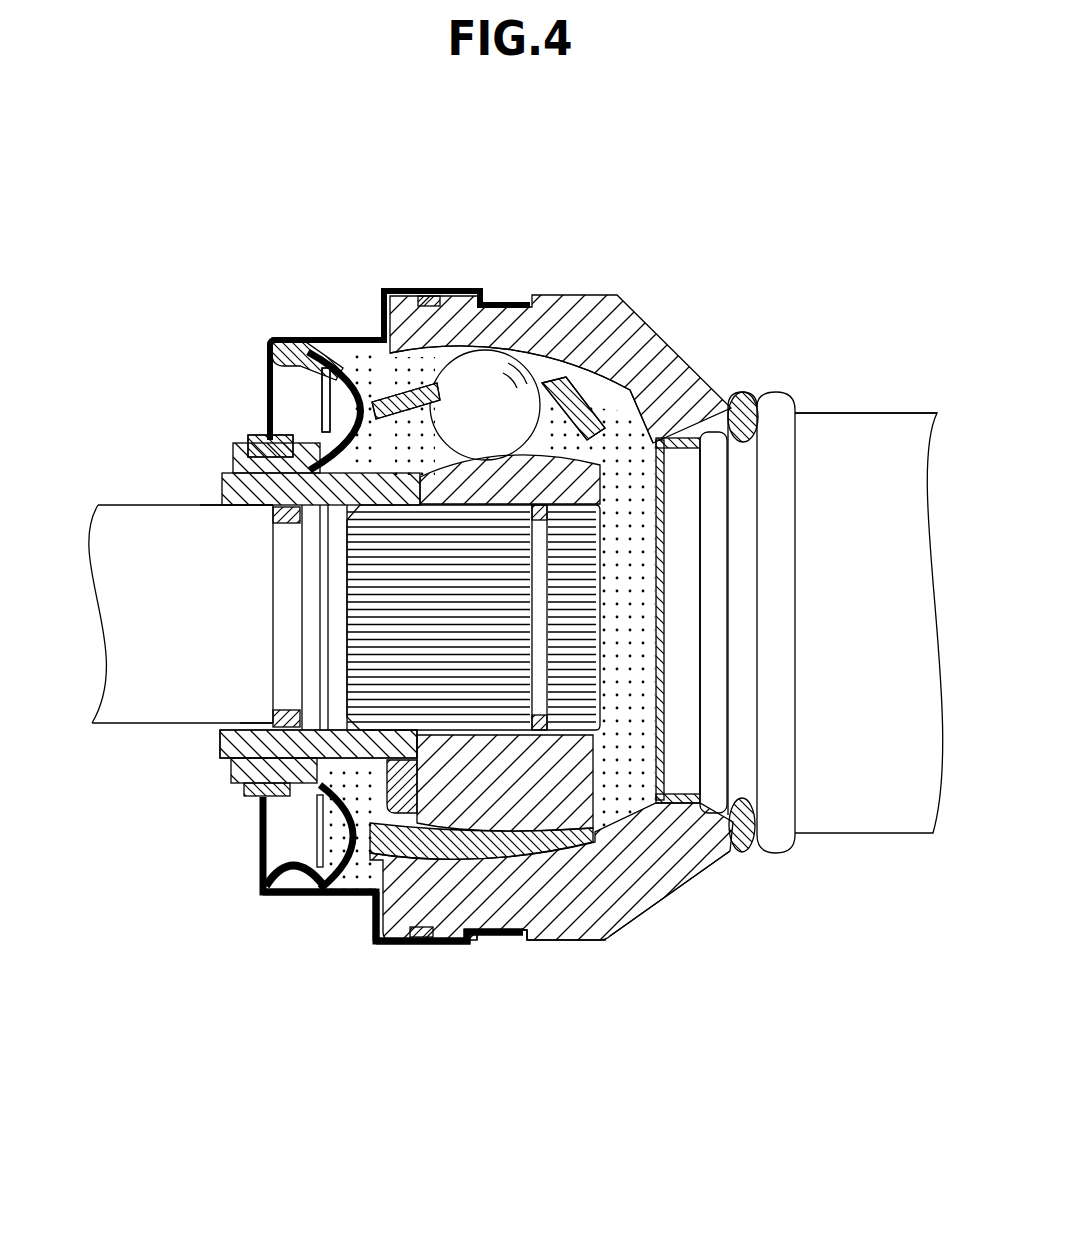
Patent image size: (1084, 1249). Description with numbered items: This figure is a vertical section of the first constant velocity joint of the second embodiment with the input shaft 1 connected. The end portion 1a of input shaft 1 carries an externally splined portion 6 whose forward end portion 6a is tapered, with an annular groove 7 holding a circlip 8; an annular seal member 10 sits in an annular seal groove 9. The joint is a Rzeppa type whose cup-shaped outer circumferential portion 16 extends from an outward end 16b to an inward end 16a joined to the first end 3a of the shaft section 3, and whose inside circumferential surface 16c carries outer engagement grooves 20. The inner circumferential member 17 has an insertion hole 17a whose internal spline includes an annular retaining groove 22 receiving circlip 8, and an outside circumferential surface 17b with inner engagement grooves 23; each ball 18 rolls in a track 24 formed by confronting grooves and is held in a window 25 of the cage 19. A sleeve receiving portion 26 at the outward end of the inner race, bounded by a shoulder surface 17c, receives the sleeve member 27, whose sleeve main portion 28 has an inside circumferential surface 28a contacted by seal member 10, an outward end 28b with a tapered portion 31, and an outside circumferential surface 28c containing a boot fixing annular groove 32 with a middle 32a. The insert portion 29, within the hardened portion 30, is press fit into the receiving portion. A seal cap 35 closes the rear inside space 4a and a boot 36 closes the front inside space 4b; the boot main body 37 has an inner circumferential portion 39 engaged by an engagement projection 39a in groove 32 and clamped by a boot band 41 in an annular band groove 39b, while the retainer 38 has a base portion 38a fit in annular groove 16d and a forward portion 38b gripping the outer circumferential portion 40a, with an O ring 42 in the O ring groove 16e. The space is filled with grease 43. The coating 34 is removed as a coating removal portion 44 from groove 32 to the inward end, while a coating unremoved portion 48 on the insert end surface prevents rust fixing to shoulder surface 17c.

The input shaft 1 is at (118, 497).
The end portion 1a is at (640, 610).
The shaft section 3 is at (913, 410).
The first end 3a is at (830, 440).
The inside space 4a is at (632, 583).
The inside space 4b is at (320, 378).
The externally splined portion 6 is at (542, 735).
The forward end portion 6a is at (537, 583).
The annular groove 7 is at (503, 623).
The circlip 8 is at (664, 682).
The annular seal groove 9 is at (283, 614).
The annular seal member 10 is at (273, 517).
The outer circumferential portion 16 is at (547, 290).
The inward end 16a is at (731, 407).
The outward end 16b is at (388, 320).
The inside circumferential surface 16c is at (598, 850).
The annular groove 16d is at (510, 302).
The O ring groove 16e is at (430, 296).
The inner circumferential member 17 is at (690, 862).
The insertion hole 17a is at (450, 938).
The outside circumferential surface 17b is at (490, 942).
The shoulder surface 17c is at (395, 735).
The balls 18 is at (485, 380).
The cage 19 is at (590, 452).
The outer engagement grooves 20 is at (568, 418).
The annular retaining groove 22 is at (658, 816).
The inner engagement grooves 23 is at (640, 395).
The track 24 is at (543, 385).
The windows 25 is at (433, 390).
The sleeve receiving portion 26 is at (352, 897).
The sleeve member 27 is at (218, 480).
The sleeve main portion 28 is at (282, 897).
The inside circumferential surface 28a is at (285, 682).
The outward end 28b is at (232, 758).
The outside circumferential surface 28c is at (376, 905).
The insert portion 29 is at (352, 345).
The hardened portion 30 is at (318, 862).
The tapered portion 31 is at (228, 760).
The boot fixing annular groove 32 is at (276, 797).
The middle 32a is at (248, 432).
The coating 34 is at (320, 530).
The seal cap 35 is at (664, 723).
The boot 36 is at (267, 336).
The boot main body 37 is at (280, 463).
The retainer 38 is at (385, 952).
The base portion 38a is at (510, 942).
The forward portion 38b is at (267, 890).
The inner circumferential portion 39 is at (237, 452).
The engagement projection 39a is at (227, 490).
The annular band groove 39b is at (278, 436).
The outer circumferential portion 40a is at (284, 338).
The boot band 41 is at (252, 798).
The O ring 42 is at (415, 735).
The grease 43 is at (664, 660).
The coating removal portion 44 is at (293, 338).
The coating unremoved portion 48 is at (365, 425).